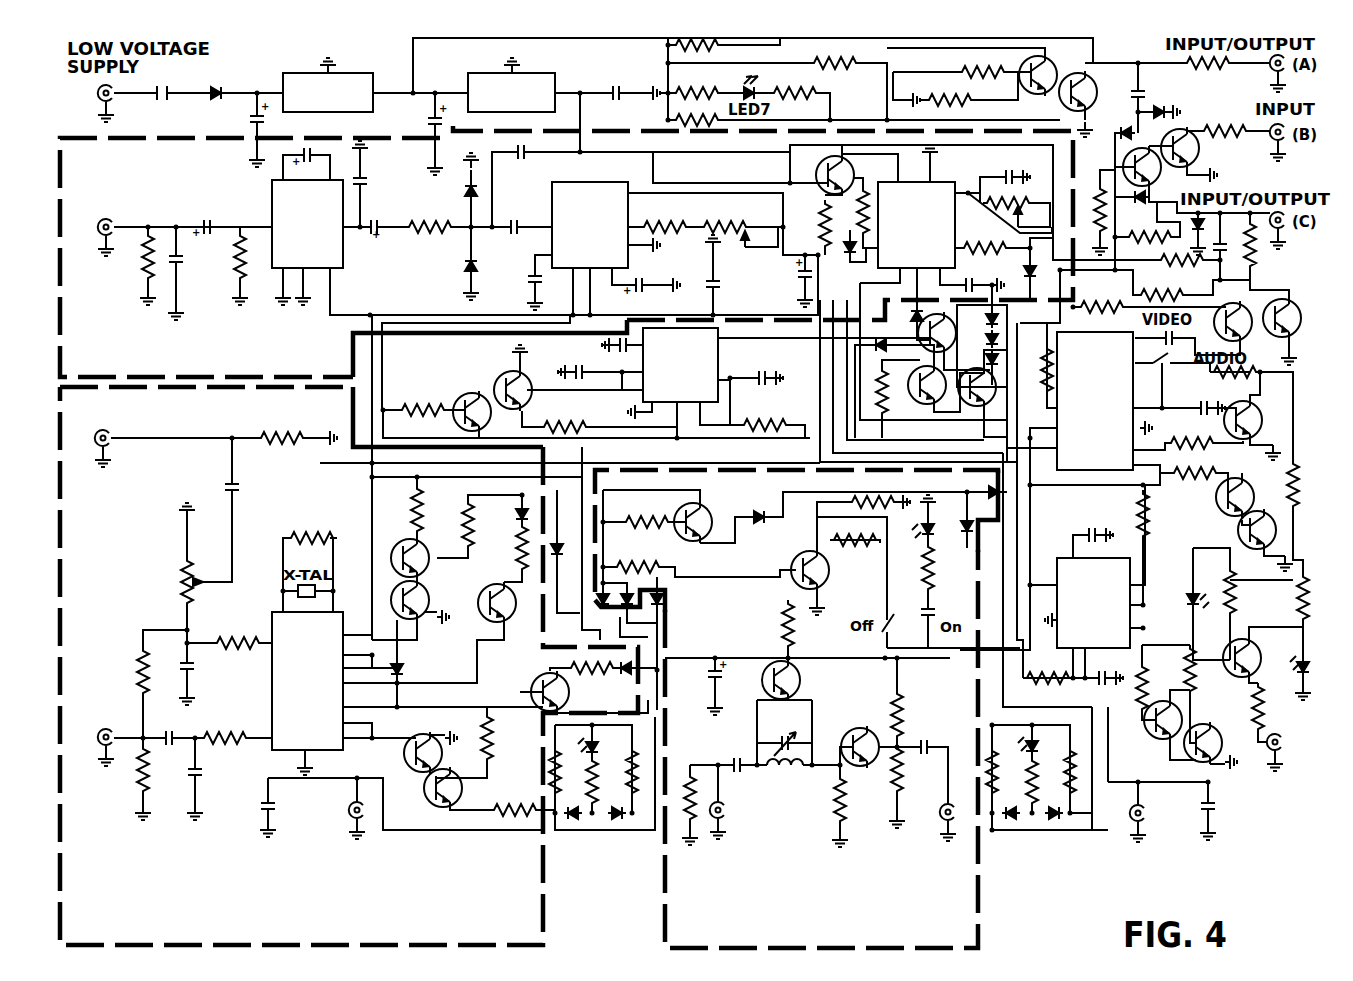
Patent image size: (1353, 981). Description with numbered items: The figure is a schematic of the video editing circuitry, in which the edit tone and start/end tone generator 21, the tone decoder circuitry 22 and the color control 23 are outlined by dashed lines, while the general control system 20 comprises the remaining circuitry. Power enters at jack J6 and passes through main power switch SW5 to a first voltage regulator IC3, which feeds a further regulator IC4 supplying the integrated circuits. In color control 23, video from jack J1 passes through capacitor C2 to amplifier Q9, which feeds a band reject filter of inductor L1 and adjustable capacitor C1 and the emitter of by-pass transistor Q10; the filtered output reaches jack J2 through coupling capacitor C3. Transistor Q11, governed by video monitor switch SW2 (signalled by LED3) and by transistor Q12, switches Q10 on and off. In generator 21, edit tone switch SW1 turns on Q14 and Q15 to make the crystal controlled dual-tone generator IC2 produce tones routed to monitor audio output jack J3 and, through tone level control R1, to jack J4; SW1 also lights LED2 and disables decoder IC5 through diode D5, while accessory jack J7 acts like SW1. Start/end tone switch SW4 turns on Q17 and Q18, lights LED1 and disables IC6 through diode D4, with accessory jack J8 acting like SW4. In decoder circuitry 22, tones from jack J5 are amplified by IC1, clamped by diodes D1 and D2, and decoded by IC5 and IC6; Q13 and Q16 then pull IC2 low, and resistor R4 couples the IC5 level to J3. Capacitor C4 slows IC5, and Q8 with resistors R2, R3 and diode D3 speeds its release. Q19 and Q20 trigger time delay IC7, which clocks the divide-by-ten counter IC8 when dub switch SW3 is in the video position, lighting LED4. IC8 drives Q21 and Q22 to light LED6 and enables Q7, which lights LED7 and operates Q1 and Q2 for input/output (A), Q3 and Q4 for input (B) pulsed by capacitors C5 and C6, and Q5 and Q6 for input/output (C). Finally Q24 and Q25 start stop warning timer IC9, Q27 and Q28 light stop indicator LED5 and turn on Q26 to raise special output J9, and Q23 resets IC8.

The general control system 20 is at (1068, 878).
The edit tone and start/end tone generator 21 is at (437, 920).
The tone decoder circuitry 22 is at (343, 362).
The color control 23 is at (835, 881).
The high gain audio amplifier IC1 is at (307, 224).
The crystal controlled dual-tone generator IC2 is at (310, 681).
The first voltage regulator IC3 is at (328, 85).
The further voltage regulator IC4 is at (511, 85).
The phase locked loop tone decoder IC5 is at (916, 225).
The phase locked tone decoder IC6 is at (590, 225).
The time delay circuit IC7 is at (680, 365).
The divide-by-ten counter IC8 is at (1095, 402).
The stop warning timer IC9 is at (1093, 603).
The transistor Q1 is at (1038, 82).
The transistor Q2 is at (1089, 104).
The transistor Q3 is at (1192, 194).
The transistor Q4 is at (1215, 153).
The transistor Q5 is at (1193, 328).
The transistor Q6 is at (1275, 325).
The transistor Q7 is at (950, 335).
The transistor Q8 is at (847, 170).
The transistor Q9 is at (860, 740).
The by-pass transistor Q10 is at (803, 680).
The transistor Q11 is at (850, 557).
The transistor Q12 is at (805, 525).
The transistor Q13 is at (500, 614).
The transistor Q14 is at (436, 559).
The transistor Q15 is at (412, 617).
The transistor Q16 is at (588, 687).
The transistor Q17 is at (489, 791).
The transistor Q18 is at (423, 747).
The transistor Q19 is at (465, 405).
The transistor Q20 is at (505, 384).
The transistor Q21 is at (982, 396).
The transistor Q22 is at (920, 390).
The transistor Q23 is at (1207, 429).
The transistor Q24 is at (1244, 489).
The transistor Q25 is at (1279, 540).
The transistor Q26 is at (1258, 689).
The transistor Q27 is at (1161, 702).
The transistor Q28 is at (1203, 713).
The indicator lamp LED1 is at (602, 773).
The indicator lamp LED2 is at (1047, 777).
The indicator lamp LED3 is at (919, 571).
The indicator lamp LED4 is at (1309, 669).
The stop indicator LED5 is at (1200, 604).
The ready to record indicator LED6 is at (981, 343).
The indicator lamp LED7 is at (749, 87).
The edit tone switch SW1 is at (1227, 818).
The video monitor switch SW2 is at (951, 621).
The dub audio/video switch SW3 is at (1172, 380).
The start/end tone switch SW4 is at (401, 807).
The main power control switch SW5 is at (160, 104).
The input jack J1 is at (936, 822).
The output jack J2 is at (729, 820).
The monitor audio output jack J3 is at (175, 748).
The playback VCR audio output jack J4 is at (216, 448).
The playback VCR audio input jack J5 is at (175, 237).
The low voltage supply jack J6 is at (95, 104).
The external accessory jack J7 is at (1147, 823).
The external accessory jack J8 is at (345, 808).
The special output J9 is at (1282, 752).
The adjustable capacitor C1 is at (781, 735).
The capacitor C2 is at (925, 740).
The coupling capacitor C3 is at (736, 757).
The capacitor C4 is at (978, 279).
The capacitor C5 is at (1148, 98).
The capacitor C6 is at (1227, 246).
The diode D1 is at (461, 219).
The diode D2 is at (461, 278).
The diode D3 is at (849, 246).
The diode D4 is at (648, 599).
The diode D5 is at (1019, 270).
The tone level control R1 is at (180, 573).
The resistor R2 is at (814, 227).
The resistor R3 is at (859, 217).
The resistor R4 is at (134, 672).
The inductor L1 is at (785, 779).